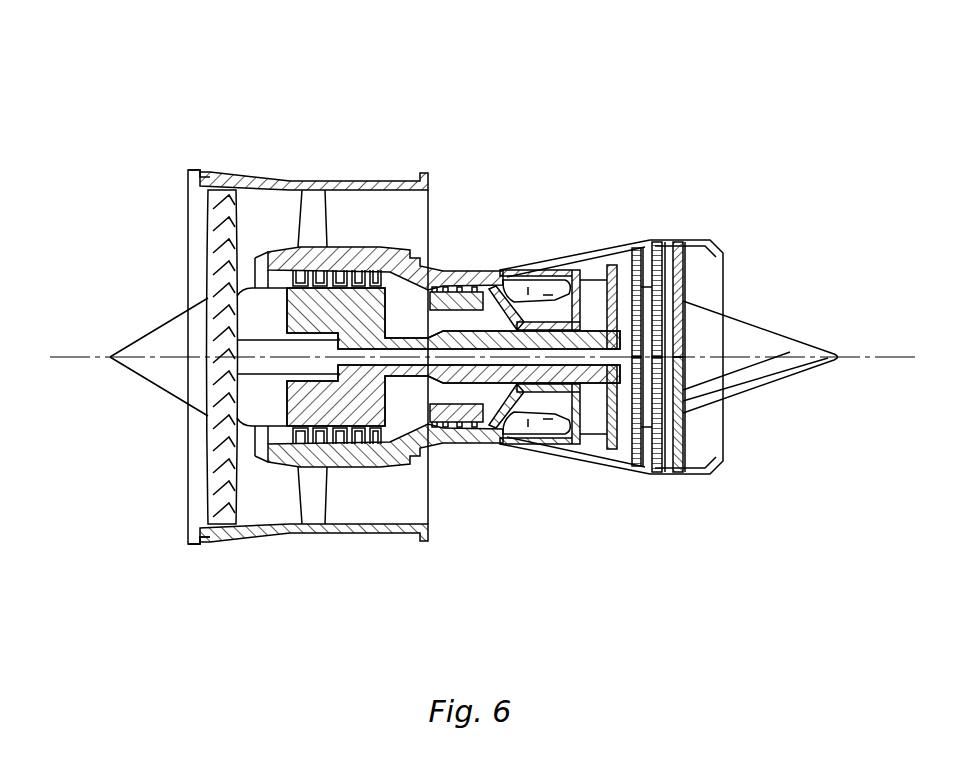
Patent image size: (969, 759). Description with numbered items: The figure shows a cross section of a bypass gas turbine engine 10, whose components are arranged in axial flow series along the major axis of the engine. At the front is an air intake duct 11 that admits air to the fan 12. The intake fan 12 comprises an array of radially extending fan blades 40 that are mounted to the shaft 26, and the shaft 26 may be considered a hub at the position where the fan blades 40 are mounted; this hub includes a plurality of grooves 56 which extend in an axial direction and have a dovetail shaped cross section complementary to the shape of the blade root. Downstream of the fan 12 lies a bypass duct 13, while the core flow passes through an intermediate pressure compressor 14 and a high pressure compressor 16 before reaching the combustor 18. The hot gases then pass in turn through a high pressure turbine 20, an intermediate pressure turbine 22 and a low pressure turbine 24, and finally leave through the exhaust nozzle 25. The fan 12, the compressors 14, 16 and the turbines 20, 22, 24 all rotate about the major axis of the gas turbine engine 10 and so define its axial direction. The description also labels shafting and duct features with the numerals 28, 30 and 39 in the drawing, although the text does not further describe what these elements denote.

The bypass gas turbine engine 10 is at (603, 86).
The air intake duct 11 is at (197, 221).
The fan 12 is at (207, 268).
The bypass duct 13 is at (357, 231).
The intermediate pressure compressor 14 is at (270, 183).
The high pressure compressor 16 is at (479, 283).
The combustor 18 is at (540, 292).
The high pressure turbine 20 is at (580, 273).
The intermediate pressure turbine 22 is at (628, 252).
The low pressure turbine 24 is at (703, 240).
The exhaust nozzle 25 is at (720, 293).
The shaft 26 is at (247, 366).
The interconnecting shaft 28 is at (496, 384).
The interconnecting shaft 30 is at (540, 392).
The bypass duct exit 39 is at (221, 556).
The fan blades 40 is at (201, 170).
The grooves 56 is at (300, 258).